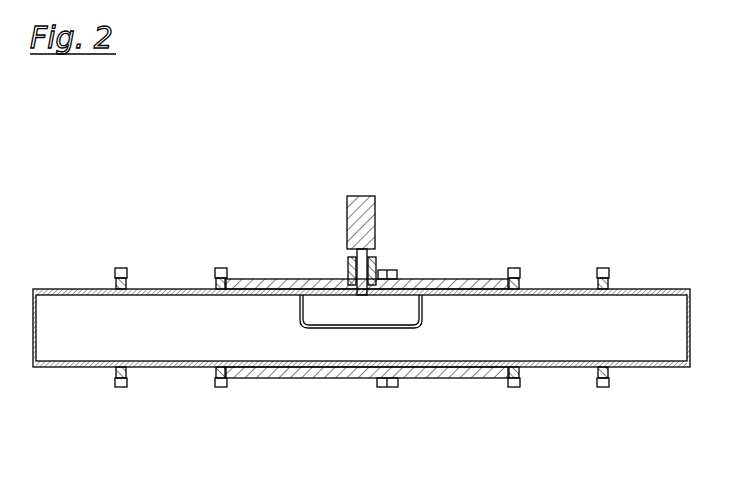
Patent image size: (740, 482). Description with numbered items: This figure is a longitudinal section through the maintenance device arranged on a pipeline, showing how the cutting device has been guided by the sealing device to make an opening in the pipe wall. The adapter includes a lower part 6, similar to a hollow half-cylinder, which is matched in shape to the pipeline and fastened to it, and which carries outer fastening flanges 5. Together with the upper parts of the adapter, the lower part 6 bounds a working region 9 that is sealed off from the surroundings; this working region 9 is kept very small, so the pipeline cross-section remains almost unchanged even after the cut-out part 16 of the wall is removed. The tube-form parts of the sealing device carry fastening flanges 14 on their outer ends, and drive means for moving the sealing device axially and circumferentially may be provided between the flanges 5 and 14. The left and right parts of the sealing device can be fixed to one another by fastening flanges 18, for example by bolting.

The outer fastening flange 5 is at (115, 371).
The lower part of the adapter 6 is at (560, 367).
The working region 9 is at (313, 288).
The fastening flange 14 is at (213, 281).
The cut-out part of the wall 16 is at (423, 287).
The fastening flange 18 is at (379, 272).